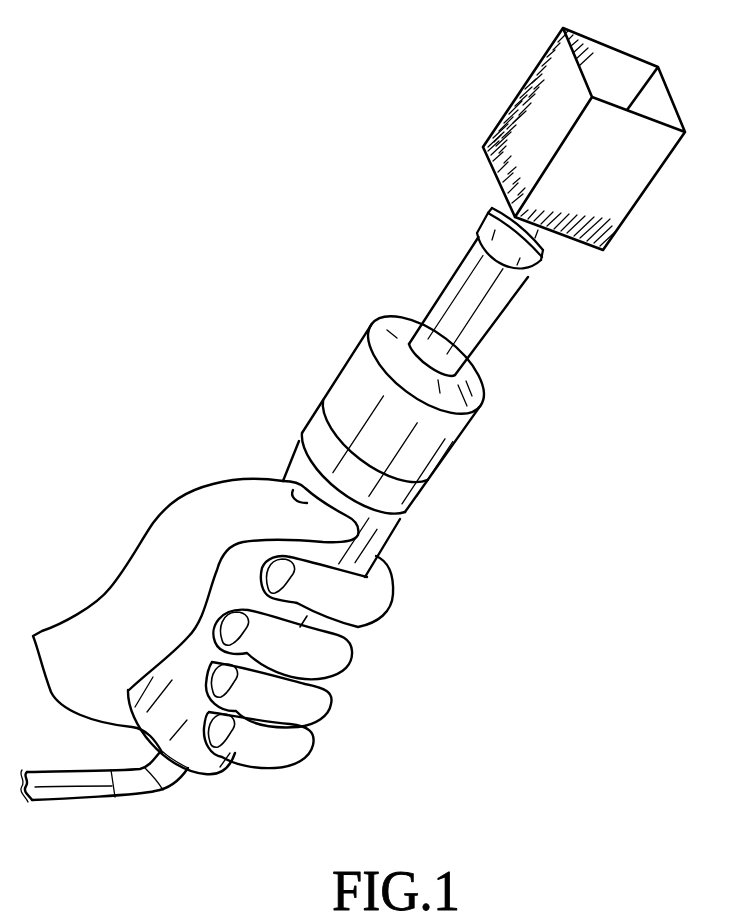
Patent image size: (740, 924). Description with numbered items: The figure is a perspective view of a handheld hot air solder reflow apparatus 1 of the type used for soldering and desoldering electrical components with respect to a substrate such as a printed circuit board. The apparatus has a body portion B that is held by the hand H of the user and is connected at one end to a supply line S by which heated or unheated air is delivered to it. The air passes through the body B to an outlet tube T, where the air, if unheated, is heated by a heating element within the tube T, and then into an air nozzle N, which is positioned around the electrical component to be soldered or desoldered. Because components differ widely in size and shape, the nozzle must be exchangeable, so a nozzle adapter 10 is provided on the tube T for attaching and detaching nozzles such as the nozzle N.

The handheld hot air solder reflow apparatus 1 is at (528, 433).
The body portion B is at (337, 368).
The outlet tube T is at (447, 278).
The nozzle adapter 10 is at (549, 264).
The air nozzle N is at (508, 103).
The hand H is at (131, 553).
The supply line S is at (100, 803).